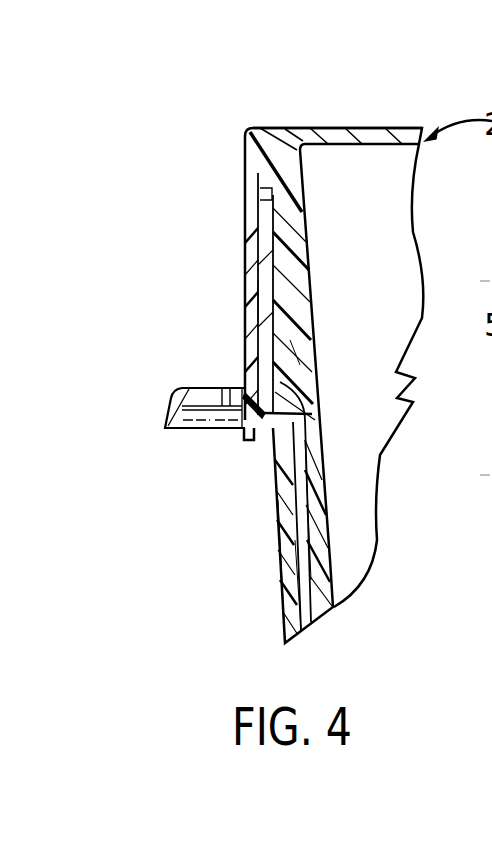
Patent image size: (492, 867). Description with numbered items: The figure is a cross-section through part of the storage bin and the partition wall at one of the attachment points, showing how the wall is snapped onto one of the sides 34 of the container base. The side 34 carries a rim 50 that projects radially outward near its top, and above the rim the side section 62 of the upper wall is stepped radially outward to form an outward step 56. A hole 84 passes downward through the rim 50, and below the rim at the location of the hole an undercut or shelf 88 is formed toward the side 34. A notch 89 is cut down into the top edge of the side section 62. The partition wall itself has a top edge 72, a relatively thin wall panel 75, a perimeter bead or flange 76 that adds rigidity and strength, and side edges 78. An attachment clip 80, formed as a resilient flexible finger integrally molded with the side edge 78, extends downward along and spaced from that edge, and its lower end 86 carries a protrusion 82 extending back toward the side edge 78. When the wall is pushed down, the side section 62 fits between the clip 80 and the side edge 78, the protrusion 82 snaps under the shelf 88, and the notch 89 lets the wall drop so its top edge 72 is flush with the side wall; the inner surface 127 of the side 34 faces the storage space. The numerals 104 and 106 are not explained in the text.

The sides 34 is at (288, 598).
The rim 50 is at (158, 394).
The outward step 56 is at (300, 365).
The side sections 62 is at (260, 300).
The top edge 72 is at (314, 128).
The wall panel 75 is at (405, 214).
The bead or flange 76 is at (362, 131).
The side edges 78 is at (298, 560).
The attachment clip 80 is at (204, 264).
The protrusion 82 is at (264, 418).
The hole 84 is at (227, 386).
The lower end 86 is at (235, 430).
The undercut or shelf 88 is at (292, 413).
The notch 89 is at (264, 173).
The region 104 is at (476, 266).
The region 106 is at (476, 460).
The inner surface 127 is at (302, 498).